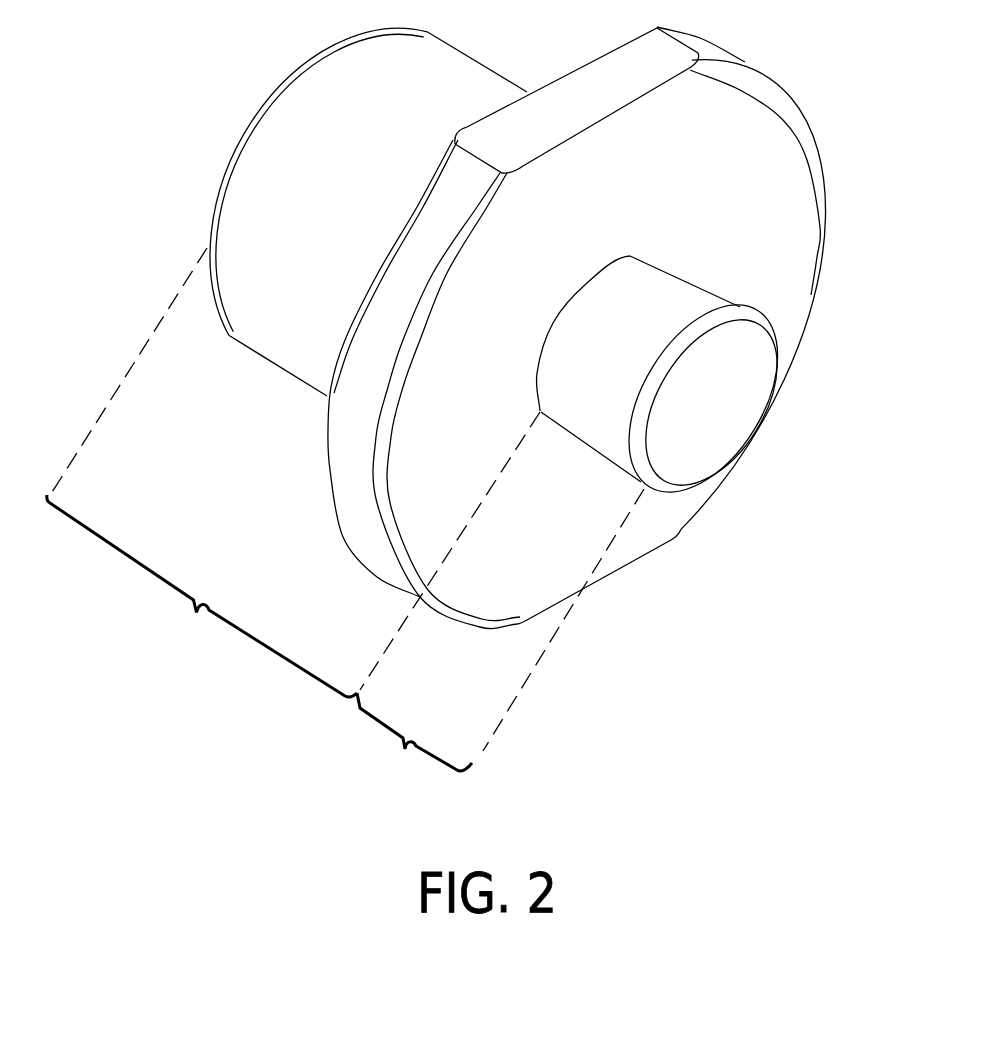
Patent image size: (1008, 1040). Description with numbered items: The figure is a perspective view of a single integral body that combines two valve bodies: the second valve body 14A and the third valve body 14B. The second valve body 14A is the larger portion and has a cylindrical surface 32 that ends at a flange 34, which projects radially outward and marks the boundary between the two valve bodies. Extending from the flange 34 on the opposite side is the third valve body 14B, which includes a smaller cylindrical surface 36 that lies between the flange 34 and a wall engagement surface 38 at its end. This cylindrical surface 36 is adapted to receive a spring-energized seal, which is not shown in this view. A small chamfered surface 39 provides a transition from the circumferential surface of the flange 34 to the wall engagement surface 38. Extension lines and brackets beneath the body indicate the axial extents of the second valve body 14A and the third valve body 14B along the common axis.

The cylindrical surface 32 is at (430, 70).
The flange 34 is at (770, 58).
The cylindrical surface 36 is at (685, 297).
The wall engagement surface 38 is at (740, 403).
The chamfered surface 39 is at (743, 317).
The second valve body 14A is at (293, 472).
The third valve body 14B is at (500, 641).